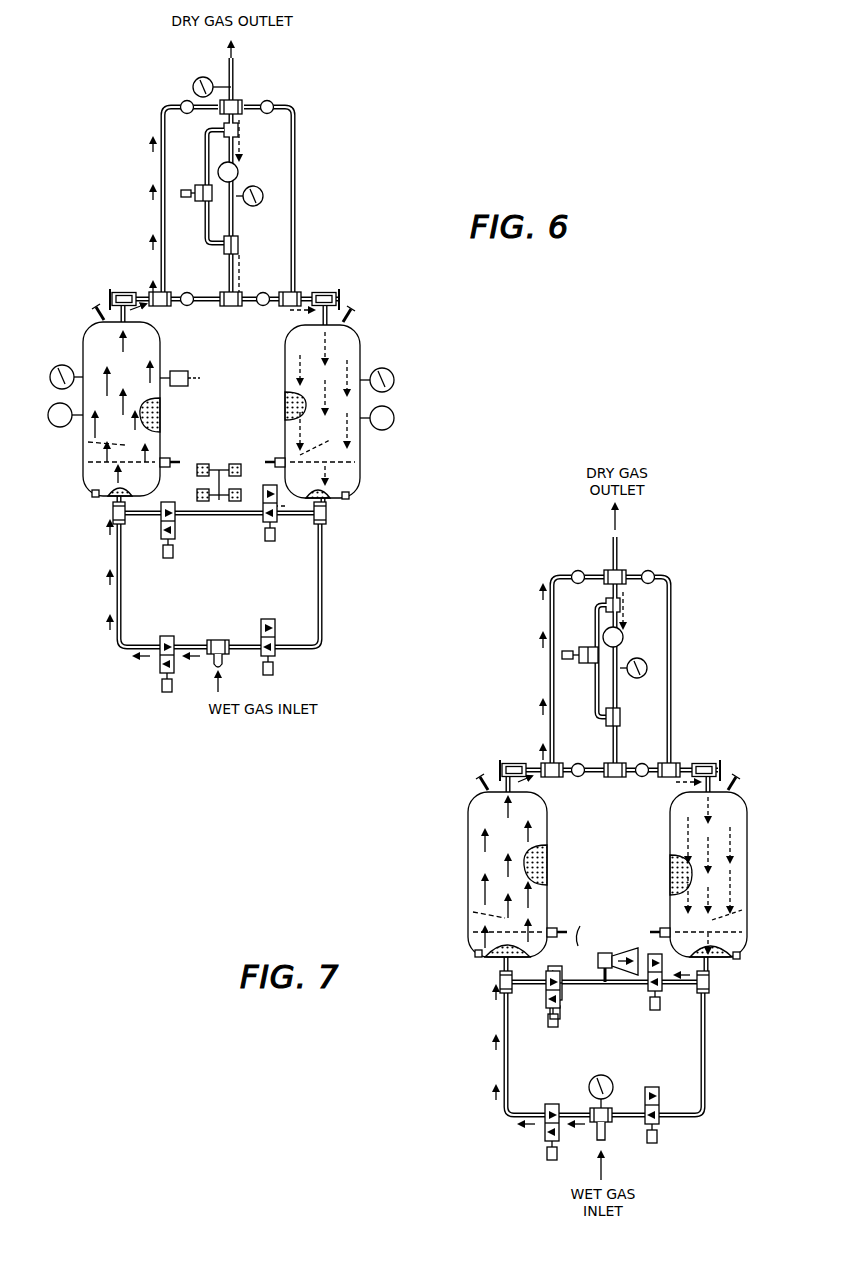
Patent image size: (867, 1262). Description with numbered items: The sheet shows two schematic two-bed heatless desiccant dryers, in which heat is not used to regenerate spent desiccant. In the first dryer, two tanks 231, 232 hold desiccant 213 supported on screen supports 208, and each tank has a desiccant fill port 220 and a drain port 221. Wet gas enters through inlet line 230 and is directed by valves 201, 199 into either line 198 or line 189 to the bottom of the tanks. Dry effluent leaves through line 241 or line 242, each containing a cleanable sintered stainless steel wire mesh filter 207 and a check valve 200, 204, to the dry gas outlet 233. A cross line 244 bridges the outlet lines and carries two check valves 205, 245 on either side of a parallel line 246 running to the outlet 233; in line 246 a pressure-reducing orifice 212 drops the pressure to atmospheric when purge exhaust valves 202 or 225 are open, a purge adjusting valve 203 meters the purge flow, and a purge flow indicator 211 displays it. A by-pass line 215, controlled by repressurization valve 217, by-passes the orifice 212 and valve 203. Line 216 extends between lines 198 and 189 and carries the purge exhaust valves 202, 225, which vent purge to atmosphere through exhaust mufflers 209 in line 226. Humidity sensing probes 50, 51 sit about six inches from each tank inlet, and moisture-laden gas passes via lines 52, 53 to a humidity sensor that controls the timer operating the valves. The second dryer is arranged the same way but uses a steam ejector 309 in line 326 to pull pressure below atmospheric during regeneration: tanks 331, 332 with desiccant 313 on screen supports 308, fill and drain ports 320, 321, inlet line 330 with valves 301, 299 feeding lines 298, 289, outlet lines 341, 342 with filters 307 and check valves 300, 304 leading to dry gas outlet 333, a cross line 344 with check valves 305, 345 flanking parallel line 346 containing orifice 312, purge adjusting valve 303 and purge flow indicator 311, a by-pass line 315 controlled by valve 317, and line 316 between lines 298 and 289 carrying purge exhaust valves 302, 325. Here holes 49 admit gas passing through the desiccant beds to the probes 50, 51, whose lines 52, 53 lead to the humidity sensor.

In FIG. 6, the check valve 200 is at (182, 102).
In FIG. 6, the dry gas outlet 233 is at (237, 76).
In FIG. 6, the check valve 204 is at (273, 104).
In FIG. 6, the repressurization valve 217 is at (201, 184).
In FIG. 6, the purge adjusting valve 203 is at (239, 172).
In FIG. 6, the purge flow indicator 211 is at (263, 196).
In FIG. 6, the outlet line 241 is at (160, 226).
In FIG. 6, the outlet line 242 is at (297, 212).
In FIG. 6, the pressure-reducing orifice 212 is at (236, 220).
In FIG. 6, the by-pass line 215 is at (206, 238).
In FIG. 6, the parallel line 246 is at (239, 248).
In FIG. 6, the cleanable filter 207 is at (124, 292).
In FIG. 6, the check valve 245 is at (187, 292).
In FIG. 6, the check valve 205 is at (263, 292).
In FIG. 6, the desiccant fill port 220 is at (96, 310).
In FIG. 6, the cross line 244 is at (212, 305).
In FIG. 6, the tank 231 is at (80, 349).
In FIG. 6, the tank 232 is at (362, 354).
In FIG. 6, the desiccant 213 is at (160, 418).
In FIG. 6, the line 53 is at (272, 458).
In FIG. 7, the line 53 is at (662, 926).
In FIG. 6, the humidity sensing probe 50 is at (86, 442).
In FIG. 7, the humidity sensing probe 50 is at (472, 910).
In FIG. 6, the holes 49 is at (88, 462).
In FIG. 7, the holes 49 is at (475, 932).
In FIG. 6, the line 52 is at (176, 458).
In FIG. 7, the line 52 is at (553, 927).
In FIG. 6, the humidity sensing probe 51 is at (312, 460).
In FIG. 7, the humidity sensing probe 51 is at (745, 912).
In FIG. 6, the exhaust muffler 209 is at (219, 468).
In FIG. 6, the screen support 208 is at (90, 480).
In FIG. 6, the desiccant drain port 221 is at (91, 496).
In FIG. 6, the line 226 is at (225, 464).
In FIG. 6, the purge exhaust valve 202 is at (162, 530).
In FIG. 6, the purge exhaust valve 225 is at (263, 522).
In FIG. 6, the line 216 is at (196, 520).
In FIG. 6, the line 198 is at (116, 602).
In FIG. 6, the valve 199 is at (273, 620).
In FIG. 6, the line 189 is at (323, 603).
In FIG. 6, the valve 201 is at (160, 674).
In FIG. 6, the inlet line 230 is at (224, 664).
In FIG. 7, the check valve 300 is at (578, 571).
In FIG. 7, the dry gas outlet 333 is at (621, 556).
In FIG. 7, the check valve 304 is at (655, 574).
In FIG. 7, the by-pass line 315 is at (597, 626).
In FIG. 7, the repressurization valve 317 is at (578, 650).
In FIG. 7, the purge adjusting valve 303 is at (624, 638).
In FIG. 7, the purge flow indicator 311 is at (648, 668).
In FIG. 7, the outlet line 341 is at (549, 686).
In FIG. 7, the outlet line 342 is at (673, 694).
In FIG. 7, the pressure-reducing orifice 312 is at (621, 692).
In FIG. 7, the parallel line 346 is at (621, 717).
In FIG. 7, the cleanable filter 307 is at (504, 765).
In FIG. 7, the check valve 345 is at (578, 763).
In FIG. 7, the check valve 305 is at (646, 755).
In FIG. 7, the desiccant fill port 320 is at (480, 783).
In FIG. 7, the cross line 344 is at (605, 778).
In FIG. 7, the tank 331 is at (466, 848).
In FIG. 7, the tank 332 is at (752, 857).
In FIG. 7, the desiccant 313 is at (548, 860).
In FIG. 7, the desiccant drain port 321 is at (478, 957).
In FIG. 7, the line 326 is at (540, 982).
In FIG. 7, the steam ejector 309 is at (607, 937).
In FIG. 7, the screen support 308 is at (498, 984).
In FIG. 7, the purge exhaust valve 302 is at (550, 1008).
In FIG. 7, the purge exhaust valve 325 is at (660, 995).
In FIG. 7, the line 316 is at (582, 990).
In FIG. 7, the line 298 is at (502, 1076).
In FIG. 7, the line 289 is at (707, 1046).
In FIG. 7, the valve 299 is at (656, 1087).
In FIG. 7, the valve 301 is at (547, 1138).
In FIG. 7, the inlet line 330 is at (606, 1142).